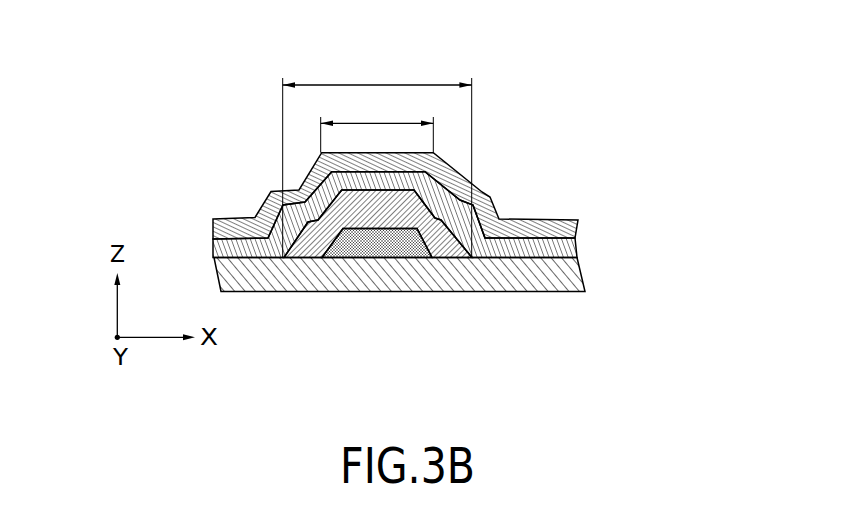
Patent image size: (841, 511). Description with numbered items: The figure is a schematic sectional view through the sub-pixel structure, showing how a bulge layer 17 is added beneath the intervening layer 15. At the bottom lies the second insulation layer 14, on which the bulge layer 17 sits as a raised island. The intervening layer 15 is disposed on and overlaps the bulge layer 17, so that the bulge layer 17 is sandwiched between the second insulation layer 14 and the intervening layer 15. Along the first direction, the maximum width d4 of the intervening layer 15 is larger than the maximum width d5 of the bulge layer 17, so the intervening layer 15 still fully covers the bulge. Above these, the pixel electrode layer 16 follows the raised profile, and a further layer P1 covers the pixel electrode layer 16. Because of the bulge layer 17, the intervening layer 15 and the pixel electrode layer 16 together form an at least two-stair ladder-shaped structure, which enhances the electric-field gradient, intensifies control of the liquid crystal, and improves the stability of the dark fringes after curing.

The second insulation layer 14 is at (565, 278).
The intervening layer 15 is at (308, 221).
The pixel electrode layer 16 is at (573, 252).
The bulge layer 17 is at (383, 243).
The planarization layer P1 is at (557, 224).
The maximum width of the intervening layer d4 is at (377, 158).
The maximum width of the bulge layer d5 is at (377, 125).